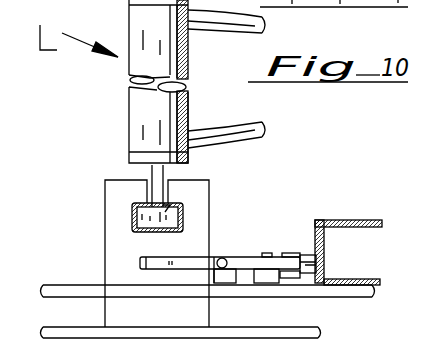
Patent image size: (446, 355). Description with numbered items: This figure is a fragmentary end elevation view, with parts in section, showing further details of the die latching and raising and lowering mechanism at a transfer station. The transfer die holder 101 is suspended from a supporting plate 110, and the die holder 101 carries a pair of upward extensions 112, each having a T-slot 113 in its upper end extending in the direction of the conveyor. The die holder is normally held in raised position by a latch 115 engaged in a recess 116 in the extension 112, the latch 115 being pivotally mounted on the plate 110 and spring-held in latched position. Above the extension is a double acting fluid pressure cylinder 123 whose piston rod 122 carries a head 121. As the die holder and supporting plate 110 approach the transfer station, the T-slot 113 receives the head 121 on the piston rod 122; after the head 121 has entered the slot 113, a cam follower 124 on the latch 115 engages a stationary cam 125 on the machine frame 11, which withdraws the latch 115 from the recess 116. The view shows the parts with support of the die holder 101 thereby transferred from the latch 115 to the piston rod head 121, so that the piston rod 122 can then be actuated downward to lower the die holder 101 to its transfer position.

The machine frame 11 is at (367, 220).
The die holder 101 is at (320, 335).
The supporting plate 110 is at (290, 298).
The upward extension 112 is at (108, 205).
The T-slot 113 is at (183, 218).
The latch 115 is at (252, 256).
The recess 116 is at (140, 265).
The head 121 is at (163, 211).
The piston rod 122 is at (152, 172).
The double acting fluid pressure cylinder 123 is at (130, 120).
The cam follower 124 is at (292, 261).
The stationary cam 125 is at (307, 256).